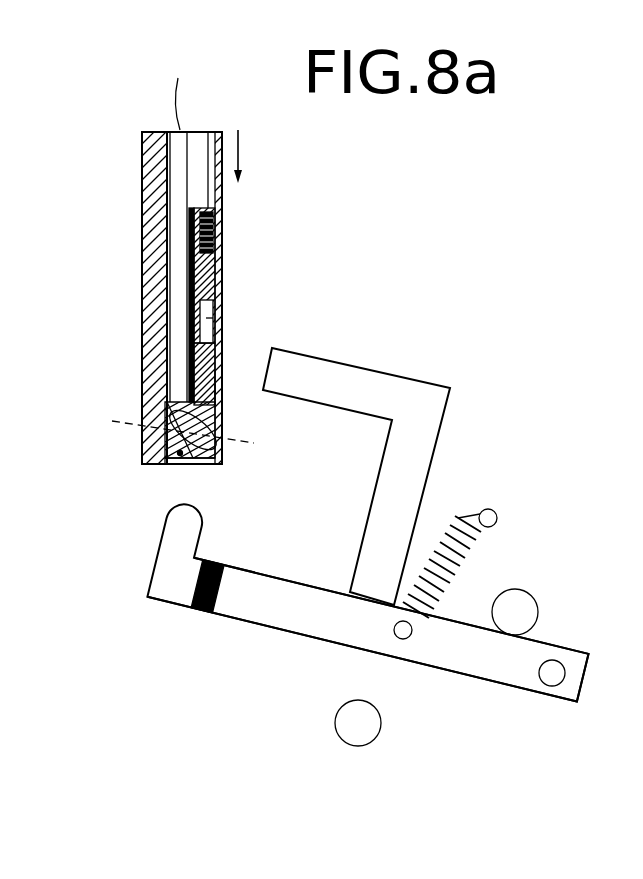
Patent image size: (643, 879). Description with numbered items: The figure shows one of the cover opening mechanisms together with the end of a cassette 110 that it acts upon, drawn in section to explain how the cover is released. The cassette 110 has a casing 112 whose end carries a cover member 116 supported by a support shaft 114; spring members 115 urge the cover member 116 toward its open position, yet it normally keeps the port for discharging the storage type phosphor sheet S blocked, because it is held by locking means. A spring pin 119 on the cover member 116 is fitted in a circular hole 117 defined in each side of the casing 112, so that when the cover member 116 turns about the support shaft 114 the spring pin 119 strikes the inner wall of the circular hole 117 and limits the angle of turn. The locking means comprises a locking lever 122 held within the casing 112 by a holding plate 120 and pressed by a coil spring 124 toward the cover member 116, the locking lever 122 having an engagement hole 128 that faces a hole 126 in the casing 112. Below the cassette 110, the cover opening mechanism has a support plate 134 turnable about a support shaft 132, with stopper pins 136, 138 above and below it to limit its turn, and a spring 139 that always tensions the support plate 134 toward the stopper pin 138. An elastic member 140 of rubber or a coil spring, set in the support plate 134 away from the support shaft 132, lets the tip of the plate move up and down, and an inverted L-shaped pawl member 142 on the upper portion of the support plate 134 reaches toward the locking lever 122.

The cassette 110 is at (131, 192).
The casing 112 is at (142, 162).
The storage type phosphor sheet S is at (177, 91).
The support shaft 114 is at (170, 464).
The spring member 115 is at (142, 462).
The cover member 116 is at (222, 455).
The circular hole 117 is at (227, 433).
The spring pin 119 is at (166, 425).
The holding plate 120 is at (222, 358).
The locking lever 122 is at (222, 387).
The coil spring 124 is at (209, 134).
The hole 126 is at (222, 293).
The engagement hole 128 is at (222, 325).
The support shaft 132 is at (552, 673).
The support plate 134 is at (443, 655).
The stopper pin 136 is at (357, 730).
The stopper pin 138 is at (518, 607).
The spring 139 is at (462, 528).
The elastic member 140 is at (203, 615).
The pawl member 142 is at (440, 395).